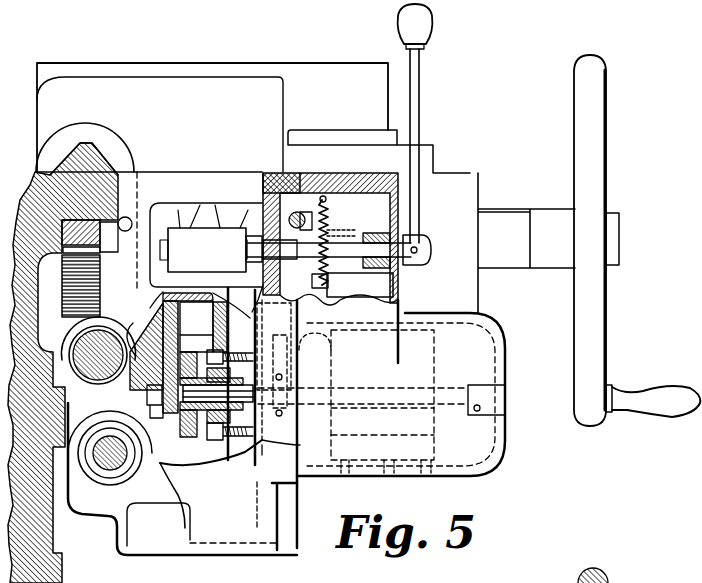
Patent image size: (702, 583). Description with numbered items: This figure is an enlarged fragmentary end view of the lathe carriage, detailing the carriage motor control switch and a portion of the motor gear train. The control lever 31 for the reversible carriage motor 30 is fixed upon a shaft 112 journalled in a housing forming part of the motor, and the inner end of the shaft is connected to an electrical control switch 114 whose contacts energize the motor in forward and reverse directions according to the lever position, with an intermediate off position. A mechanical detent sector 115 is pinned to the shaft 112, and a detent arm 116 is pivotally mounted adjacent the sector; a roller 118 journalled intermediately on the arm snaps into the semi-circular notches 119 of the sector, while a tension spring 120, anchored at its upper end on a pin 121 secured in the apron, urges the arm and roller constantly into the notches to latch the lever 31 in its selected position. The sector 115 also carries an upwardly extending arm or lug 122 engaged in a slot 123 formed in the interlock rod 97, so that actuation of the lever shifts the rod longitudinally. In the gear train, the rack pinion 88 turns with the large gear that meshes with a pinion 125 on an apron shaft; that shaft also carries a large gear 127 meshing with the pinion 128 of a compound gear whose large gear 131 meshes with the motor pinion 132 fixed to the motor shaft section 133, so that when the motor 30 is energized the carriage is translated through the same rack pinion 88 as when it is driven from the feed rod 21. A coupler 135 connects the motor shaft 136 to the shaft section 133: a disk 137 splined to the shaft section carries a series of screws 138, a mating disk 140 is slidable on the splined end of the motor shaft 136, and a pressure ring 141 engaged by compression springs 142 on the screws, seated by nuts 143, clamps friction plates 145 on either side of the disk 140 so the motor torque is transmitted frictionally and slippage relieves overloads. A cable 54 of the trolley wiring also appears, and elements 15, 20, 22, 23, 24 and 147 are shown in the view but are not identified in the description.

The wall 15 is at (50, 548).
The gear 20 is at (95, 168).
The feed rod 21 is at (108, 468).
The bearing 22 is at (100, 370).
The housing bottom 23 is at (275, 552).
The shaft 24 is at (100, 246).
The carriage motor 30 is at (480, 472).
The control lever 31 is at (418, 90).
The cable 54 is at (205, 230).
The rack pinion 88 is at (97, 278).
The interlock rod 97 is at (248, 240).
The shaft 112 is at (370, 240).
The electrical control switch 114 is at (205, 238).
The mechanical detent sector 115 is at (322, 198).
The detent arm 116 is at (331, 287).
The roller 118 is at (327, 305).
The semi-circular notches 119 is at (312, 283).
The tension spring 120 is at (345, 221).
The pin 121 is at (336, 185).
The arm or lug 122 is at (297, 170).
The slot 123 is at (277, 172).
The pinion 125 is at (160, 303).
The large gear 127 is at (246, 301).
The pinion 128 is at (195, 357).
The large gear 131 is at (150, 330).
The pinion 132 is at (186, 440).
The motor shaft section 133 is at (210, 445).
The coupler 135 is at (225, 445).
The motor shaft 136 is at (240, 392).
The disk 137 is at (222, 445).
The screws 138 is at (232, 445).
The mating disk 140 is at (250, 398).
The pressure ring 141 is at (250, 420).
The compression springs 142 is at (262, 455).
The nuts 143 is at (302, 444).
The friction plates 145 is at (300, 497).
The handle 147 is at (585, 100).